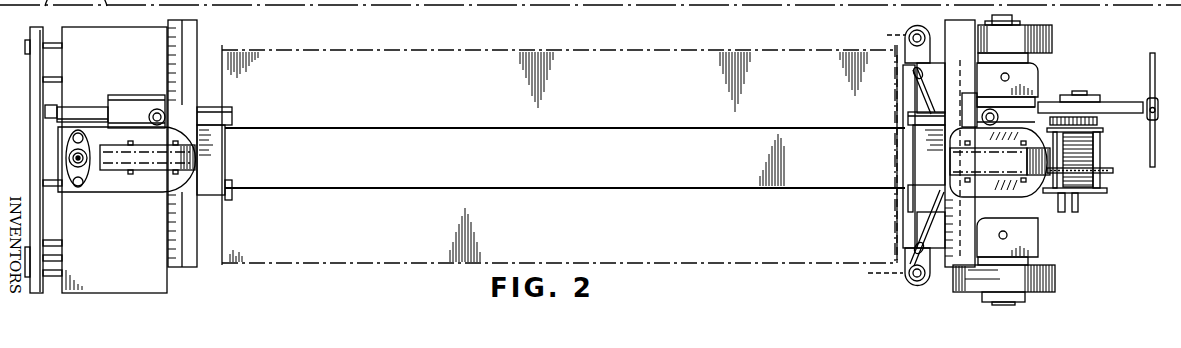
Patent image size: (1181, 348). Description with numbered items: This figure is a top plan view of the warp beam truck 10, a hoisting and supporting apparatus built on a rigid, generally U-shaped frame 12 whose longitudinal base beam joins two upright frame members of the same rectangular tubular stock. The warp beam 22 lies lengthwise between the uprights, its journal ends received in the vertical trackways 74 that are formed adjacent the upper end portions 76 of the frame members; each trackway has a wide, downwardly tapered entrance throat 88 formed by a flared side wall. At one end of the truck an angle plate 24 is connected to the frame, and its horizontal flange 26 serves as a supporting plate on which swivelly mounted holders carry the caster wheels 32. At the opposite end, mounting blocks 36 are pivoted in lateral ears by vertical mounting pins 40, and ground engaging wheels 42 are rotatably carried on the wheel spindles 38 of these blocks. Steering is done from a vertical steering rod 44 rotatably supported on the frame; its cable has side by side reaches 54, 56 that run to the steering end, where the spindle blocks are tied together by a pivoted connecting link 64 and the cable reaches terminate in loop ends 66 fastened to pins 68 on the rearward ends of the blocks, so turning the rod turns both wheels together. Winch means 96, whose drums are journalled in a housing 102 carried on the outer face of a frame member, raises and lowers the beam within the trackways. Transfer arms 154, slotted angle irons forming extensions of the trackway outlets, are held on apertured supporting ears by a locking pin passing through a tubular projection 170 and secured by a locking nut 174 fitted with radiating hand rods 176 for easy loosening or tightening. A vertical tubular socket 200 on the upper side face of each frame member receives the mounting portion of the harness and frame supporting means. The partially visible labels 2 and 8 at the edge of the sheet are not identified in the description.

The side plate 2 is at (27, 40).
The frame member 8 is at (30, 90).
The warp beam truck 10 is at (661, 116).
The frame 12 is at (398, 124).
The warp beam 22 is at (452, 56).
The angle plate 24 is at (178, 288).
The horizontal flange 26 is at (113, 276).
The caster wheels 32 is at (52, 260).
The mounting blocks 36 is at (1030, 84).
The wheel spindles 38 is at (1017, 16).
The vertical mounting pins 40 is at (1009, 76).
The ground engaging wheels 42 is at (1037, 40).
The vertical steering rod 44 is at (74, 160).
The cable reach 54 is at (918, 215).
The cable reach 56 is at (925, 82).
The pivoted connecting link 64 is at (922, 103).
The loop ends 66 is at (870, 154).
The pins 68 is at (912, 34).
The vertical trackways 74 is at (202, 44).
The upper end portions 76 is at (102, 180).
The entrance throat 88 is at (185, 223).
The winch means 96 is at (1114, 168).
The housing 102 is at (1093, 197).
The transfer arms 154 is at (238, 110).
The tubular projection 170 is at (80, 107).
The locking nut 174 is at (1108, 133).
The radiating hand rods 176 is at (1150, 66).
The vertical tubular socket 200 is at (147, 108).